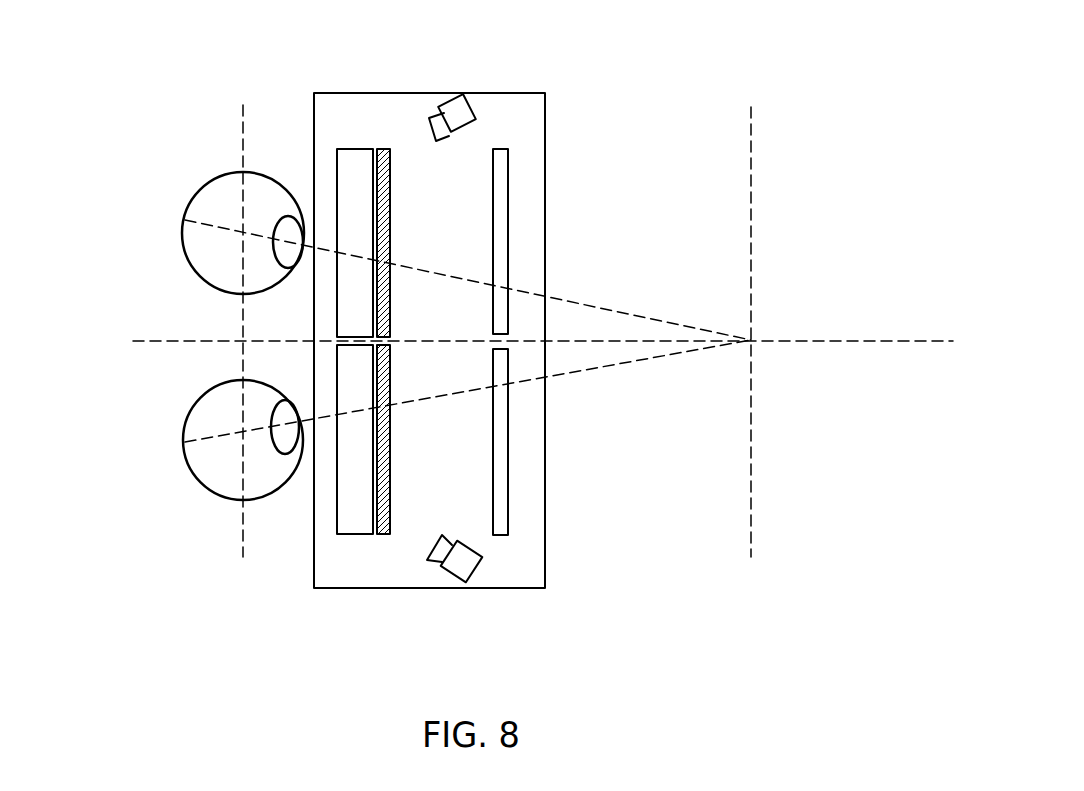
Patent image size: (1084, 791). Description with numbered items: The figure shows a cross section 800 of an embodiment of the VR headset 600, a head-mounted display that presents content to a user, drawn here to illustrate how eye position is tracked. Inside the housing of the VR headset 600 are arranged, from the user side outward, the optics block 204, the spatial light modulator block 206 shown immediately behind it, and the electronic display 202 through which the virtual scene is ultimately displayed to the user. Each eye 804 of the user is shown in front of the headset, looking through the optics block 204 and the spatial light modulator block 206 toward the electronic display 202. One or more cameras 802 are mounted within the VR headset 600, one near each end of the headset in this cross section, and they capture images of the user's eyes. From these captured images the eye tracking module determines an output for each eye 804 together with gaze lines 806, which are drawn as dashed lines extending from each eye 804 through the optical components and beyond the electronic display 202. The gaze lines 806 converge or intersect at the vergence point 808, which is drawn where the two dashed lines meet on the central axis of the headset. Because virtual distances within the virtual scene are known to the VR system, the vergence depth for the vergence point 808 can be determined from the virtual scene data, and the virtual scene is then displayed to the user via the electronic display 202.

The cross section 800 is at (122, 78).
The VR headset 600 is at (545, 97).
The optics block 204 is at (353, 149).
The spatial light modulator (SLM) block 206 is at (382, 149).
The electronic display 202 is at (508, 176).
The camera 802 is at (455, 97).
The eye 804 is at (187, 216).
The gaze lines 806 is at (662, 357).
The vergence point 808 is at (751, 340).